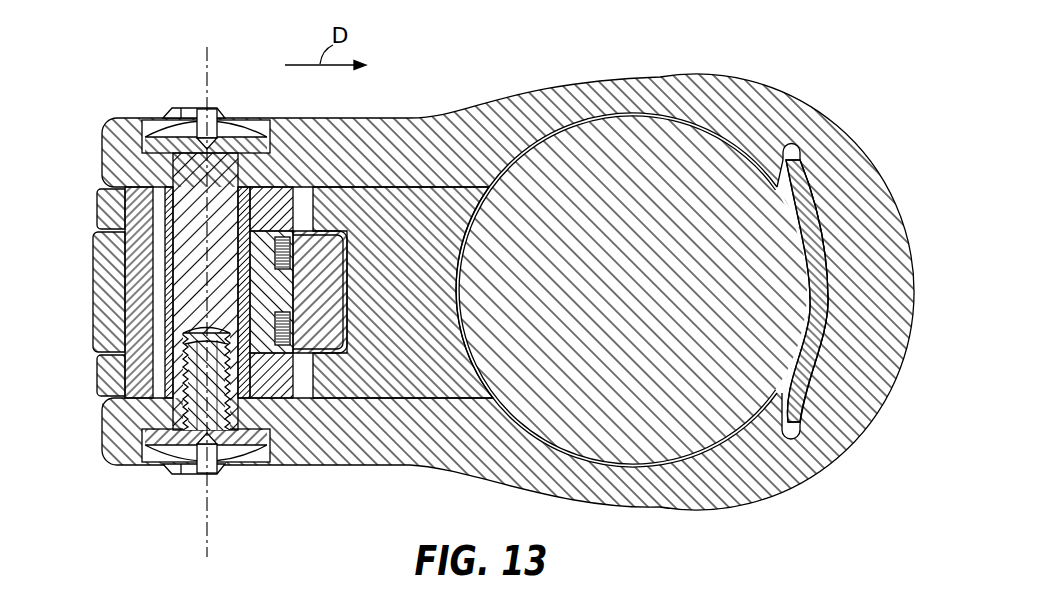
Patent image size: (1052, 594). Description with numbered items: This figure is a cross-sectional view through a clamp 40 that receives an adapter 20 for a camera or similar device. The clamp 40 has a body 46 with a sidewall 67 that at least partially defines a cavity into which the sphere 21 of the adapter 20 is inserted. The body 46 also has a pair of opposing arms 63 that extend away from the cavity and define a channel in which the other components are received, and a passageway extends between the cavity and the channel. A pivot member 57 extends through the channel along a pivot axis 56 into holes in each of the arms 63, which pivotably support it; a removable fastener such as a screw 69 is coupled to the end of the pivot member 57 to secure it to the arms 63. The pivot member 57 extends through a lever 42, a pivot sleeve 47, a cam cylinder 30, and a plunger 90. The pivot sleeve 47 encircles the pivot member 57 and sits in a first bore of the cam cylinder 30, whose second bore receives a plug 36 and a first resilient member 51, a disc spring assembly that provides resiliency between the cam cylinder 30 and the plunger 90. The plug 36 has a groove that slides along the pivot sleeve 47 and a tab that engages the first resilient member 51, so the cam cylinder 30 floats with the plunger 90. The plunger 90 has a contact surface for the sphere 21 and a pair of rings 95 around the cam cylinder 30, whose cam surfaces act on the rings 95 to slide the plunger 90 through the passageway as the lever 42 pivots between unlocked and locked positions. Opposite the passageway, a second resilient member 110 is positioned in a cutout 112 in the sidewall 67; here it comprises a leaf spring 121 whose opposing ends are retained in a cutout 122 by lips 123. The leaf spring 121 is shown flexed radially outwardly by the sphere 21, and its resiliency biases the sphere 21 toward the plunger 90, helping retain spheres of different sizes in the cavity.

The adapter 20 is at (672, 140).
The sphere 21 is at (617, 150).
The cam cylinder 30 is at (138, 284).
The plug 36 is at (262, 335).
The clamp 40 is at (813, 103).
The lever 42 is at (100, 248).
The body 46 is at (530, 108).
The pivot sleeve 47 is at (167, 243).
The first resilient member 51 is at (257, 238).
The pivot axis 56 is at (200, 510).
The pivot member 57 is at (203, 292).
The arms 63 is at (123, 140).
The sidewall 67 is at (827, 140).
The screw 69 is at (250, 443).
The plunger 90 is at (393, 220).
The rings 95 is at (97, 200).
The second resilient member 110 is at (840, 265).
The cutout 112 is at (817, 208).
The leaf spring 121 is at (814, 357).
The cutout 122 is at (830, 360).
The lips 123 is at (767, 187).